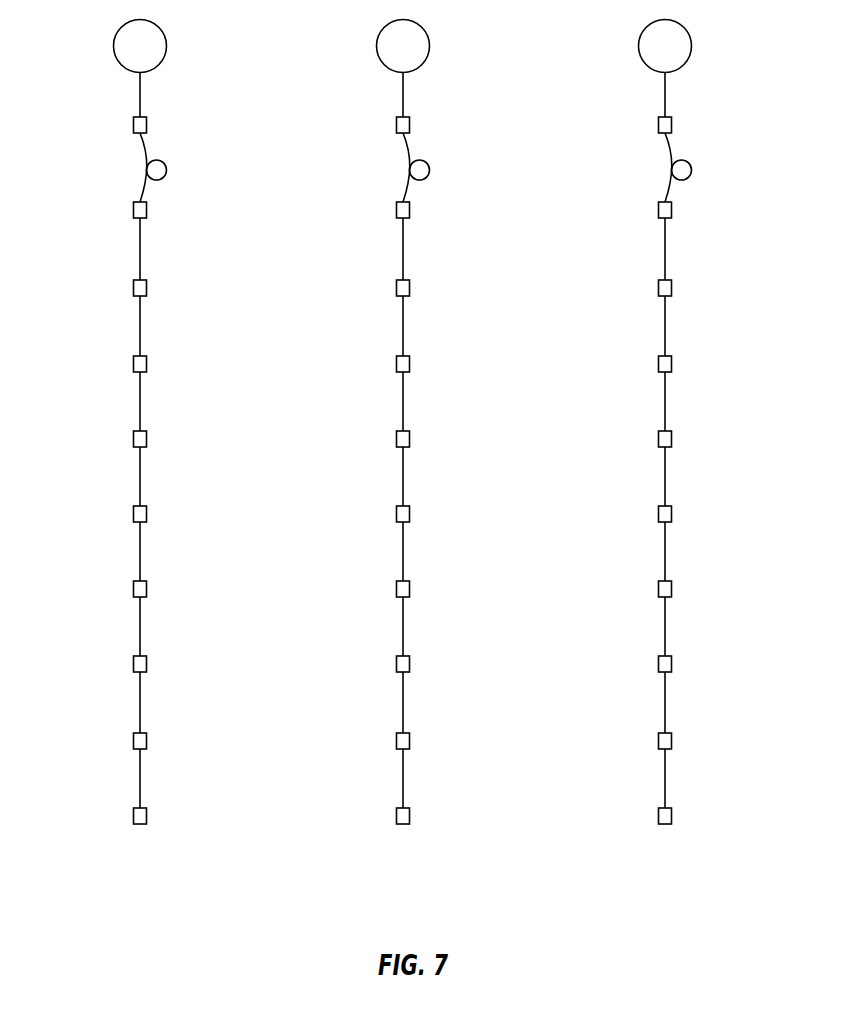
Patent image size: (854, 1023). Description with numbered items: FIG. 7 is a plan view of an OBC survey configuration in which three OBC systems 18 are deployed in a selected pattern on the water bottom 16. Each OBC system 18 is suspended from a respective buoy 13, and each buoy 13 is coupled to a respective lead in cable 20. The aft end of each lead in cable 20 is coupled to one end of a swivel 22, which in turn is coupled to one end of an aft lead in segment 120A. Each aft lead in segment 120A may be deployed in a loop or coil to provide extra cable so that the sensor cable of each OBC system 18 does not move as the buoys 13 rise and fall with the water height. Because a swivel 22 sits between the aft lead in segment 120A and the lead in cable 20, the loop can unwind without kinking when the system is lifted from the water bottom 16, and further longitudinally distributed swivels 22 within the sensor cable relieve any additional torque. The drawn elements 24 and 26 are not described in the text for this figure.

The buoy 13 is at (155, 47).
The lead in cable 20 is at (141, 93).
The swivel 22 is at (147, 124).
The aft lead in segment 120A is at (142, 186).
The solar module connector 24 is at (147, 287).
The end connector 26 is at (147, 815).
The OBC system 18 is at (143, 844).
The water bottom 16 is at (802, 430).